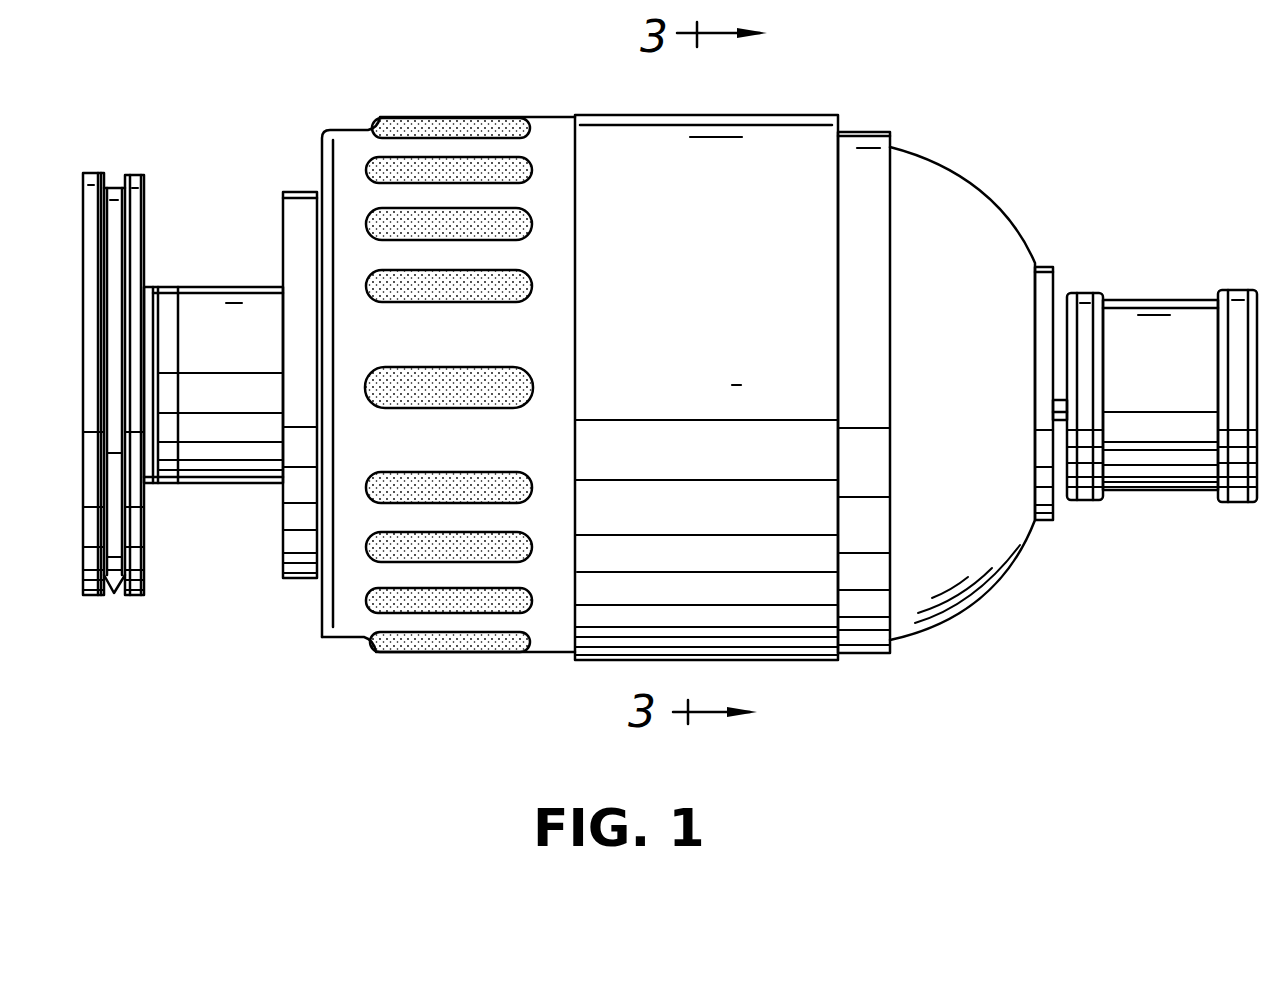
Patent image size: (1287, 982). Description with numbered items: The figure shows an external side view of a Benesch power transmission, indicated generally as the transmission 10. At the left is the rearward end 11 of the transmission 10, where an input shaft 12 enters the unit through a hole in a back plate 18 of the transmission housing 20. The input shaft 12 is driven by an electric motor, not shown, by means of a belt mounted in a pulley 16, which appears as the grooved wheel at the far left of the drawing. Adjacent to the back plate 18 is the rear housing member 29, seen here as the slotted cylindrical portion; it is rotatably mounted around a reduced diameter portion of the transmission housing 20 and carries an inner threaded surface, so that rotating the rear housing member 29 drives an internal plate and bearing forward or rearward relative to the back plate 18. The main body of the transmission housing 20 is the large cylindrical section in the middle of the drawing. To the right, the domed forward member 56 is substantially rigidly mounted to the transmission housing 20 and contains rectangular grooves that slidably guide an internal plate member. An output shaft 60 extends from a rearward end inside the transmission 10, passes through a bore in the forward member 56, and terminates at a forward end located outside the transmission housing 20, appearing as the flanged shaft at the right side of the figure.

The power transmission 10 is at (348, 704).
The rearward end 11 is at (215, 300).
The input shaft 12 is at (153, 367).
The pulley 16 is at (103, 174).
The back plate 18 is at (303, 220).
The transmission housing 20 is at (563, 125).
The rear housing member 29 is at (432, 101).
The forward member 56 is at (960, 200).
The output shaft 60 is at (1060, 383).